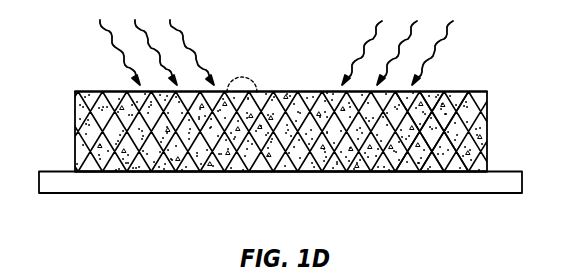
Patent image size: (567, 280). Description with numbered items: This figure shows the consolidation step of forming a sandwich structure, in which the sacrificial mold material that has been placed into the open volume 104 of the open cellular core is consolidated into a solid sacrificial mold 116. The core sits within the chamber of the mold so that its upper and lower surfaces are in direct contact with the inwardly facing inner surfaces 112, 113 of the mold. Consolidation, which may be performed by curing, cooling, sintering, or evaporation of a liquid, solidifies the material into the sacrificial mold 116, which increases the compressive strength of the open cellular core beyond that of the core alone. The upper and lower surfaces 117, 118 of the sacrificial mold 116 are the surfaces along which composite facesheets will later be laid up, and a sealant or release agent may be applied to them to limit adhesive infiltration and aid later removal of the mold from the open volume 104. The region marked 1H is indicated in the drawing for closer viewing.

The enlarged region 1H is at (240, 76).
The open volume 104 is at (373, 153).
The inner surface of the mold 112 is at (450, 92).
The inner surface of the mold 113 is at (448, 172).
The solid sacrificial mold 116 is at (445, 110).
The upper surface of the sacrificial mold 117 is at (282, 92).
The lower surface of the sacrificial mold 118 is at (282, 172).